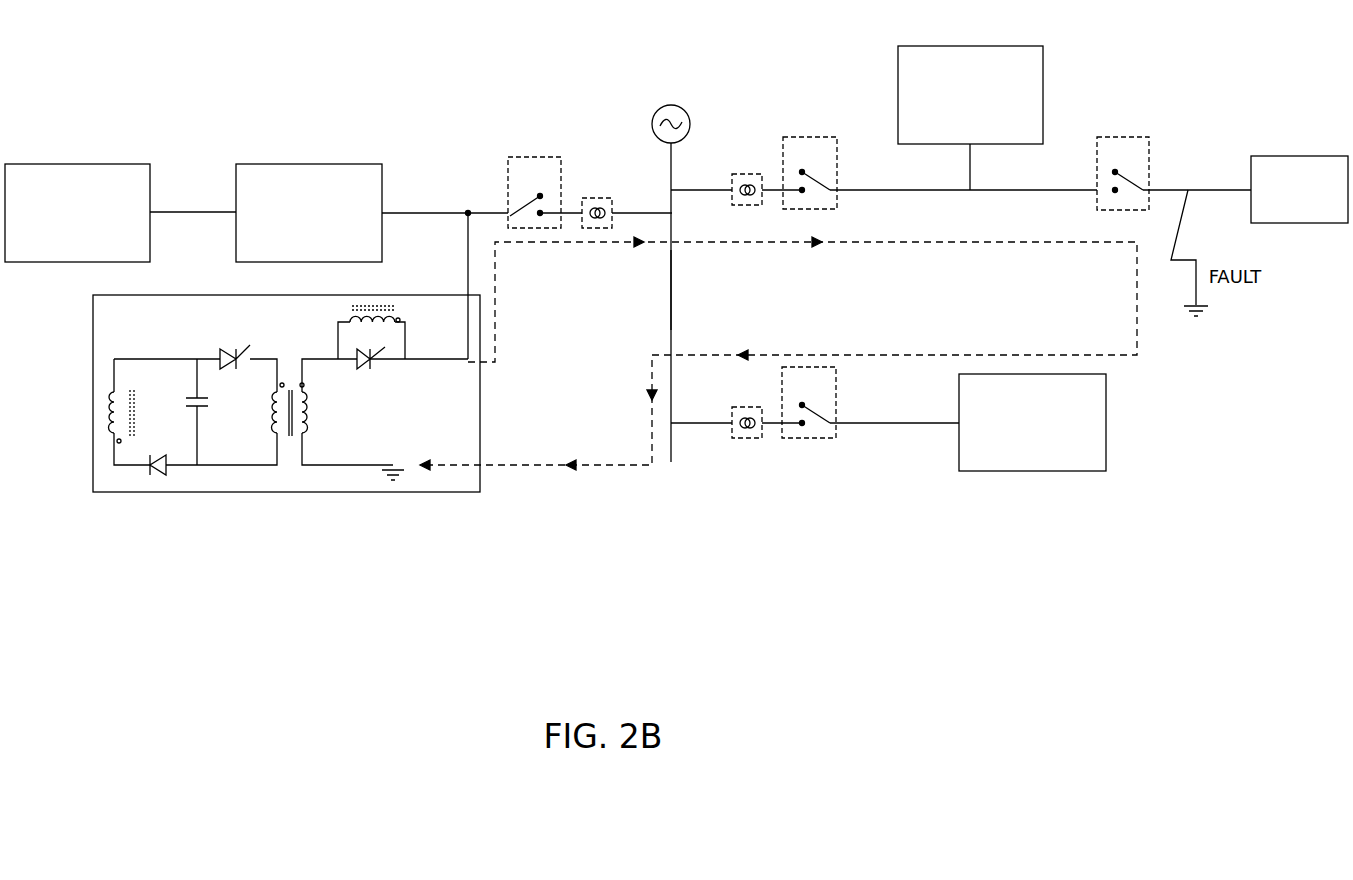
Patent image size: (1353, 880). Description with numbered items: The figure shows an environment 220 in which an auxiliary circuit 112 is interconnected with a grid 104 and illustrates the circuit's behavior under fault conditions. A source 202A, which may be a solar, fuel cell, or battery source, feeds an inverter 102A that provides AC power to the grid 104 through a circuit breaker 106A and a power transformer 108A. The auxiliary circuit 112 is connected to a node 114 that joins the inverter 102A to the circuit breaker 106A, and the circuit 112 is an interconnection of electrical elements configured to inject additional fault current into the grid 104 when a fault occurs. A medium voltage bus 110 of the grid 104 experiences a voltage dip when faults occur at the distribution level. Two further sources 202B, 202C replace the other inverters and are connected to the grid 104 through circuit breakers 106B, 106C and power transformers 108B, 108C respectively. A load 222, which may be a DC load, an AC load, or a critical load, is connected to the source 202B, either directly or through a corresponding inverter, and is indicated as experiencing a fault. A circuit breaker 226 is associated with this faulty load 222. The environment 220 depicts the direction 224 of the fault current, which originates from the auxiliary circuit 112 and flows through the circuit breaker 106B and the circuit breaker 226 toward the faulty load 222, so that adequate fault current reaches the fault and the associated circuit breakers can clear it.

The grid 104 is at (671, 105).
The circuit breaker 106A is at (540, 157).
The circuit breaker 106B is at (815, 137).
The circuit breaker 106C is at (805, 440).
The power transformer 108A is at (597, 198).
The power transformer 108B is at (746, 174).
The power transformer 108C is at (747, 440).
The medium voltage bus 110 is at (672, 311).
The auxiliary circuit 112 is at (93, 335).
The node 114 is at (468, 210).
The environment 220 is at (1143, 645).
The load 222 is at (1299, 189).
The direction of the fault current 224 is at (778, 353).
The circuit breaker 226 is at (1120, 137).
The source 202A is at (77, 213).
The source 202B is at (970, 118).
The source 202C is at (1032, 422).
The inverter 102A is at (309, 213).